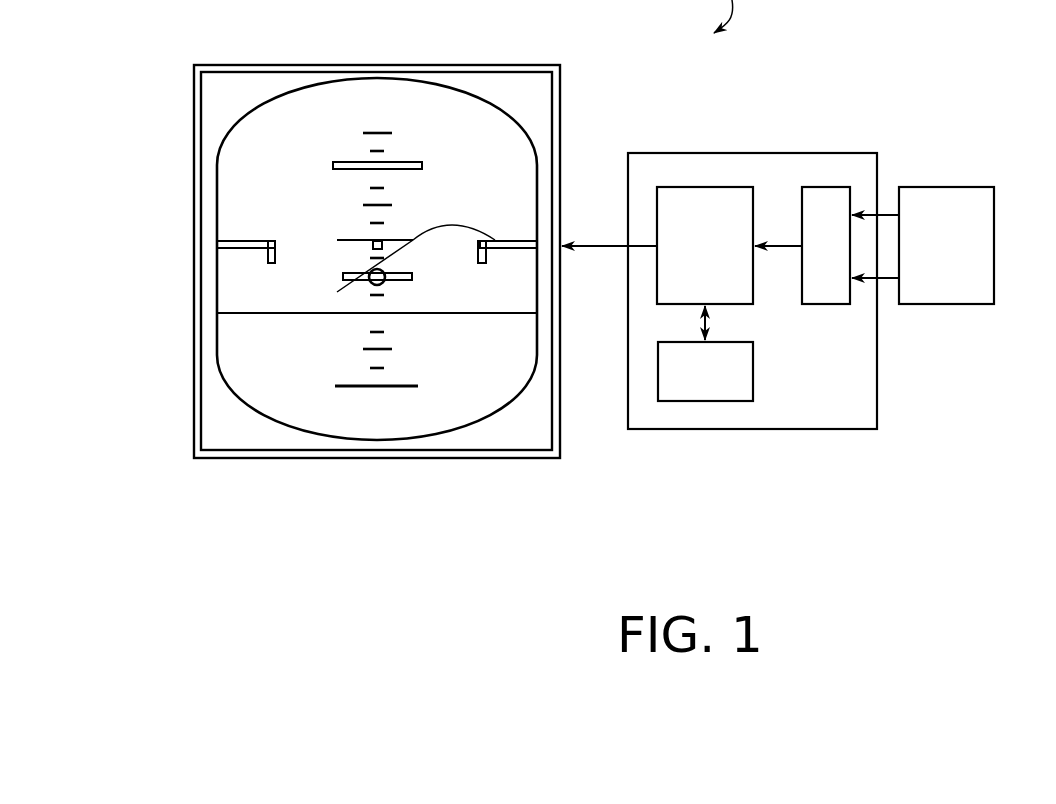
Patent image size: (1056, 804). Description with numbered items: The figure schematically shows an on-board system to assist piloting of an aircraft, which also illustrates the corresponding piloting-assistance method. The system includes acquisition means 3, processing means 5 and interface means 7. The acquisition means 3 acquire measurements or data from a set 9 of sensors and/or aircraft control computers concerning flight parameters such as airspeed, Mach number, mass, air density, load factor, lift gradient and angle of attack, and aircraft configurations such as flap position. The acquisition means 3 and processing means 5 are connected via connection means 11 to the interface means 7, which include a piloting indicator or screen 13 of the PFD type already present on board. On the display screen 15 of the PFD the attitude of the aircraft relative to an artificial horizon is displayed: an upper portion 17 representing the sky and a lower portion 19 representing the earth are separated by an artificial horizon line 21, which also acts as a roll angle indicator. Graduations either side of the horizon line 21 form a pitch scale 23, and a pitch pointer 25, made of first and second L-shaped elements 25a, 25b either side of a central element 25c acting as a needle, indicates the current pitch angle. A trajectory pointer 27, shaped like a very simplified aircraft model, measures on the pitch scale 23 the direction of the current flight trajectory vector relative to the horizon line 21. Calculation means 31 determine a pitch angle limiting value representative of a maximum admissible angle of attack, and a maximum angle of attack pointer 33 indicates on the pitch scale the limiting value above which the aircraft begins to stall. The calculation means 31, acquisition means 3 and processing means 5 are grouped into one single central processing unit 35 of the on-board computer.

The acquisition means 3 is at (827, 187).
The processing means 5 is at (705, 187).
The interface means 7 is at (563, 90).
The set of sensors and/or aircraft control computers 9 is at (950, 187).
The connection means 11 is at (603, 245).
The piloting indicator or screen 13 is at (315, 72).
The display screen 15 is at (275, 96).
The upper portion 17 is at (281, 185).
The lower portion 19 is at (484, 368).
The artificial horizon line 21 is at (432, 315).
The pitch scale 23 is at (312, 335).
The pitch pointer 25 is at (129, 203).
The first L-shaped element 25a is at (235, 240).
The second L-shaped element 25b is at (343, 277).
The central element 25c is at (373, 243).
The trajectory pointer 27 is at (412, 277).
The calculation means 31 is at (753, 370).
The maximum angle of attack pointer 33 is at (333, 163).
The central processing unit 35 is at (745, 430).